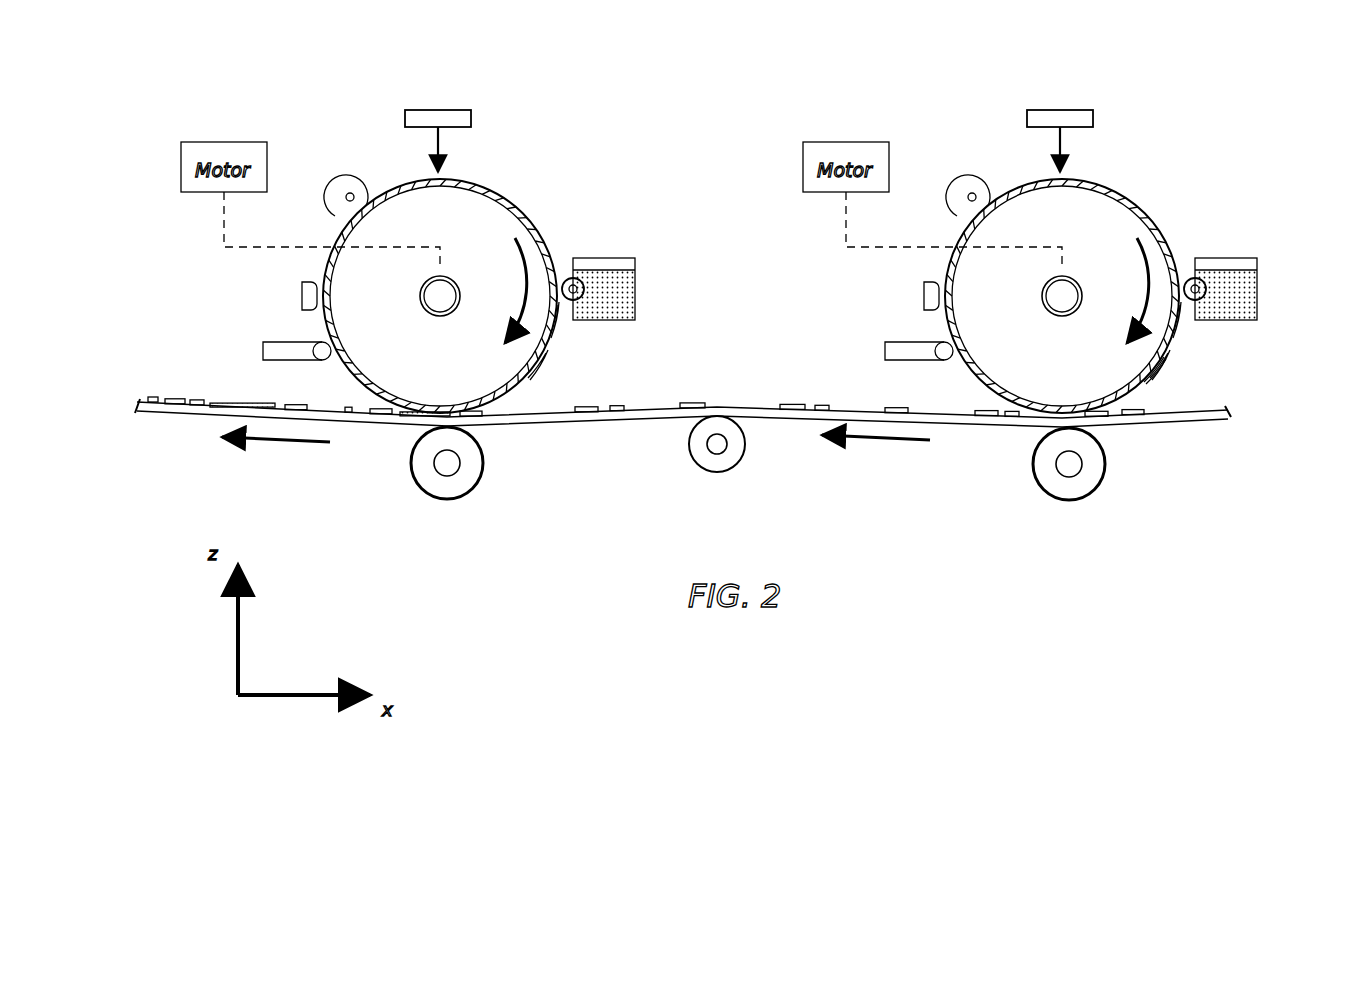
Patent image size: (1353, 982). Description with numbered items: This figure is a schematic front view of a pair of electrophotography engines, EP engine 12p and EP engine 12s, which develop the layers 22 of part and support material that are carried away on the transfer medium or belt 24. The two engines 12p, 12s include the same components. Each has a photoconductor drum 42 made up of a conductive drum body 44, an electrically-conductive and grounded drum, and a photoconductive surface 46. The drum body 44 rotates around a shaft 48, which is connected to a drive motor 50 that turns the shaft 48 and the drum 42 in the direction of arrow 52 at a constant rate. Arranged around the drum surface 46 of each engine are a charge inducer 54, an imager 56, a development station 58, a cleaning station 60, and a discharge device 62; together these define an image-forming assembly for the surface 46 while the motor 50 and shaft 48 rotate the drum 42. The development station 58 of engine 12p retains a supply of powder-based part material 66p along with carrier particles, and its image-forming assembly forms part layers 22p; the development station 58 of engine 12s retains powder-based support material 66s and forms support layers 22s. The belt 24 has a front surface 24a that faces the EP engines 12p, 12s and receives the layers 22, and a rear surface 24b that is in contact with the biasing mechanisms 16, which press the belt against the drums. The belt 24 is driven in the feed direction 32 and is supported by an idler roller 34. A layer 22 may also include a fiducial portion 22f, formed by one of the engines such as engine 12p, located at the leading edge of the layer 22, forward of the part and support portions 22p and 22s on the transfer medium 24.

The EP engine 12p is at (532, 100).
The EP engine 12s is at (1154, 100).
The biasing mechanism 16 is at (465, 472).
The layer 22 is at (222, 392).
The fiducial portion 22f is at (152, 396).
The part layer 22p is at (568, 350).
The support layer 22s is at (700, 400).
The transfer medium 24 is at (1192, 424).
The front surface 24a is at (750, 402).
The rear surface 24b is at (757, 426).
The feed direction 32 is at (290, 446).
The idler roller 34 is at (718, 472).
The photoconductor drum 42 is at (545, 210).
The conductive drum body 44 is at (751, 357).
The photoconductive surface 46 is at (503, 178).
The shaft 48 is at (432, 297).
The drive motor 50 is at (196, 142).
The direction of rotation 52 is at (532, 266).
The charge inducer 54 is at (355, 178).
The imager 56 is at (430, 110).
The development station 58 is at (642, 250).
The cleaning station 60 is at (285, 342).
The discharge device 62 is at (302, 290).
The part material 66p is at (622, 282).
The support material 66s is at (1240, 302).